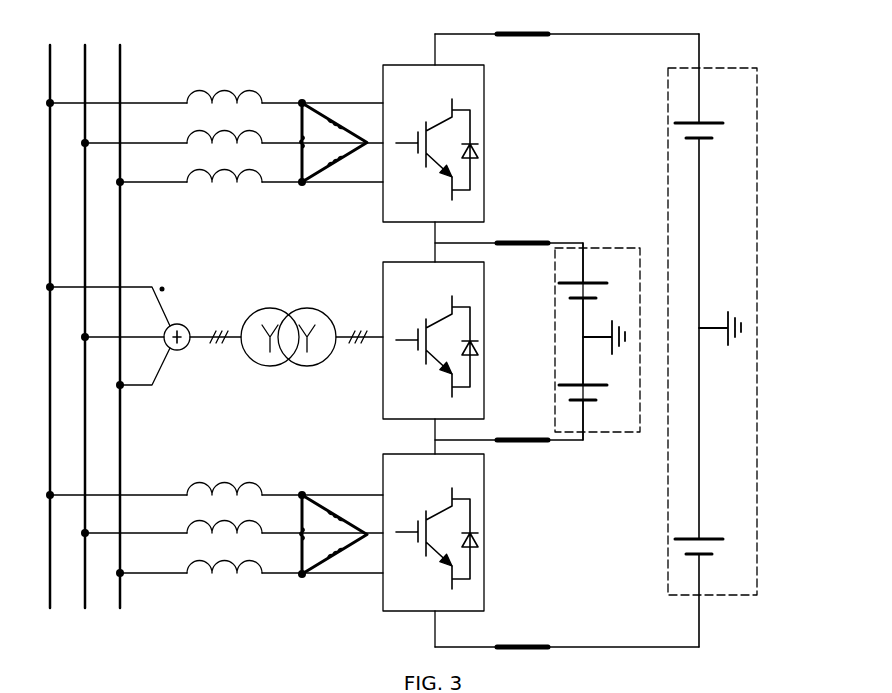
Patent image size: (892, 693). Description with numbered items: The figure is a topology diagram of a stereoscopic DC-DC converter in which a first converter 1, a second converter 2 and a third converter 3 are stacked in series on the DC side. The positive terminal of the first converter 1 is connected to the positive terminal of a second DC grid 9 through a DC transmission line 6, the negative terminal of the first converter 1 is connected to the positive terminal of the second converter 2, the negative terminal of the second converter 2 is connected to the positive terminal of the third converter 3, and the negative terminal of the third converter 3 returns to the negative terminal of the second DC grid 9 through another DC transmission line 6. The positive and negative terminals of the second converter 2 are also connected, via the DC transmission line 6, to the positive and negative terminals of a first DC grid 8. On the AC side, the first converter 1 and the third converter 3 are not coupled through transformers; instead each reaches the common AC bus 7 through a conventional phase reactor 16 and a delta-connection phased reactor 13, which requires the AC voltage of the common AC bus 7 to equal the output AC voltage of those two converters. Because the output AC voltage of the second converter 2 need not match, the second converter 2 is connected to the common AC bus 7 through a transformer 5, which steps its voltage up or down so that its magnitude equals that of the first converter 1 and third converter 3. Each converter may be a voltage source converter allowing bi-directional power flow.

The first converter 1 is at (485, 110).
The second converter 2 is at (484, 305).
The third converter 3 is at (484, 515).
The transformer 5 is at (285, 306).
The DC transmission line 6 is at (537, 40).
The common AC bus 7 is at (90, 73).
The first DC grid 8 is at (590, 246).
The second DC grid 9 is at (757, 328).
The delta-connection phased reactor 13 is at (318, 102).
The conventional phase reactor 16 is at (215, 92).